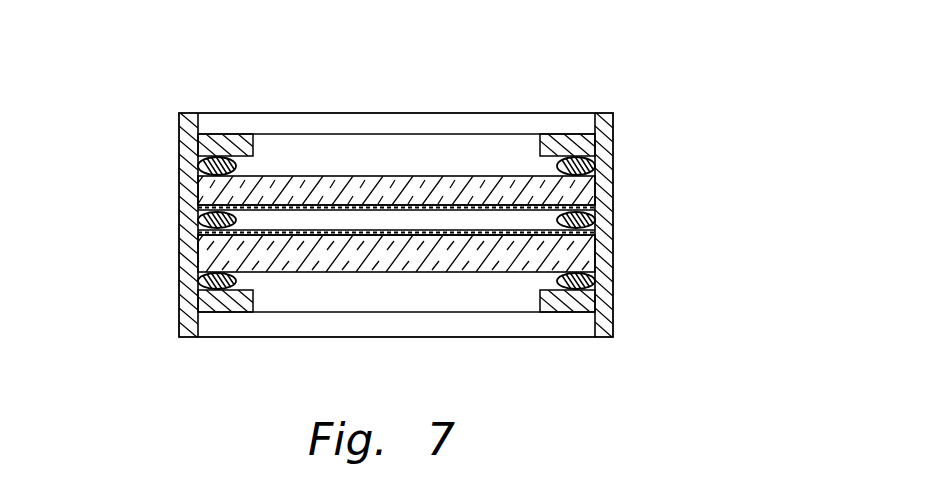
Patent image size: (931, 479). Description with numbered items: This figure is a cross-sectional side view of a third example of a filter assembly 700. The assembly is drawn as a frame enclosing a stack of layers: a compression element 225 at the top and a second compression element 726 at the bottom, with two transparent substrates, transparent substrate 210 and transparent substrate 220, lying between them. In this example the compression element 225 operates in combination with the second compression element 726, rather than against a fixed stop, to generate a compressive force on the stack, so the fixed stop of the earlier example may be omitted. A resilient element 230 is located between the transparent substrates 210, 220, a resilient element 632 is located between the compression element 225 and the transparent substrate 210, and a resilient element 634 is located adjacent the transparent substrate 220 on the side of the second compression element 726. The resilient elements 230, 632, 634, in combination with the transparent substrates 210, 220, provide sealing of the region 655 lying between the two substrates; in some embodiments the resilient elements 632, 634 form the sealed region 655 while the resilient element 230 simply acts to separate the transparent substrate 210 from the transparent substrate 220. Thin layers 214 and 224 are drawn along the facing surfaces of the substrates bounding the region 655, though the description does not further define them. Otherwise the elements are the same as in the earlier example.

The filter assembly 700 is at (676, 111).
The transparent substrate 210 is at (206, 186).
The transparent substrate 220 is at (208, 252).
The first electrode layer 214 is at (407, 212).
The second electrode layer 224 is at (416, 229).
The compression element 225 is at (552, 141).
The resilient element 230 is at (207, 219).
The resilient element 632 is at (212, 163).
The resilient element 634 is at (210, 283).
The region 655 is at (533, 215).
The second compression element 726 is at (565, 313).